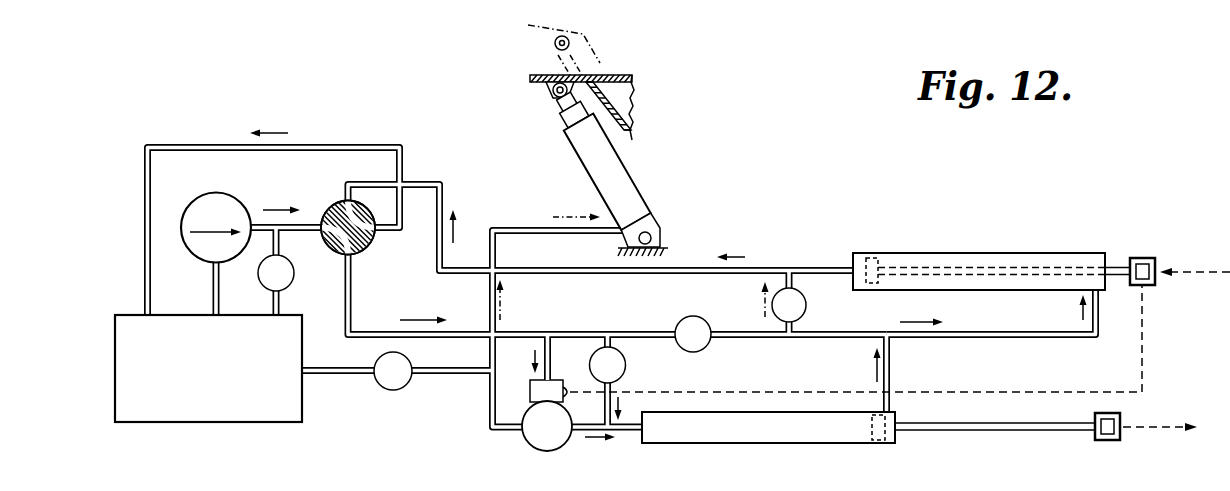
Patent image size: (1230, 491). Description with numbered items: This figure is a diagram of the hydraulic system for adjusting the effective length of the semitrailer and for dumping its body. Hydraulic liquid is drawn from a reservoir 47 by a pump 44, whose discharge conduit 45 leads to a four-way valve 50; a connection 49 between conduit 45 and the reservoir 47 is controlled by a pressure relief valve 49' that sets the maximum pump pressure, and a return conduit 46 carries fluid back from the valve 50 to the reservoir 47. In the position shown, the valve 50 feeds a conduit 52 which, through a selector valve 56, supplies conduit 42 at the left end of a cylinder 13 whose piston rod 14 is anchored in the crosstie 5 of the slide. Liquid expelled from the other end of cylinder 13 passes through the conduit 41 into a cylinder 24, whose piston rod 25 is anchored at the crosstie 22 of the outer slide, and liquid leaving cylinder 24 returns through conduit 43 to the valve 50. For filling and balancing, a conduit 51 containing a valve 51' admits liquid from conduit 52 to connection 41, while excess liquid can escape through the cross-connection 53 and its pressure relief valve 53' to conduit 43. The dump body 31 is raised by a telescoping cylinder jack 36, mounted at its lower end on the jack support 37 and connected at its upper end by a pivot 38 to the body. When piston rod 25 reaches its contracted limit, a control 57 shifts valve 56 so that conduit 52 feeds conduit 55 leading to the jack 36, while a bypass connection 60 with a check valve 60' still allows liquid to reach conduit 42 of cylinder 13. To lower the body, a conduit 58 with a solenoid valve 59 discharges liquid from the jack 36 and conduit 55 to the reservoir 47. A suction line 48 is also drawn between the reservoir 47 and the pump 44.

The crosstie 5 is at (1110, 443).
The cylinder 13 is at (800, 446).
The piston rod 14 is at (1013, 432).
The crosstie 22 is at (1150, 258).
The cylinder 24 is at (970, 257).
The piston rod 25 is at (1113, 266).
The dump body 31 is at (603, 78).
The telescoping cylinder jack 36 is at (630, 190).
The jack support 37 is at (655, 241).
The pivot 38 is at (553, 92).
The conduit 41 is at (998, 326).
The conduit 42 is at (625, 432).
The conduit 43 is at (812, 267).
The pump 44 is at (243, 178).
The conduit 45 is at (303, 231).
The return conduit 46 is at (358, 132).
The reservoir 47 is at (133, 370).
The suction conduit 48 is at (210, 282).
The connection 49 is at (298, 272).
The pressure relief valve 49' is at (259, 281).
The four-way valve 50 is at (330, 203).
The conduit 51 is at (690, 316).
The valve 51' is at (708, 320).
The conduit 52 is at (353, 313).
The cross-connection 53 is at (800, 303).
The pressure relief valve 53' is at (807, 306).
The conduit 55 is at (533, 227).
The selector valve 56 is at (563, 446).
The control 57 is at (567, 380).
The conduit 58 is at (450, 374).
The valve 59 is at (391, 392).
The connection 60 is at (856, 339).
The check valve 60' is at (634, 381).